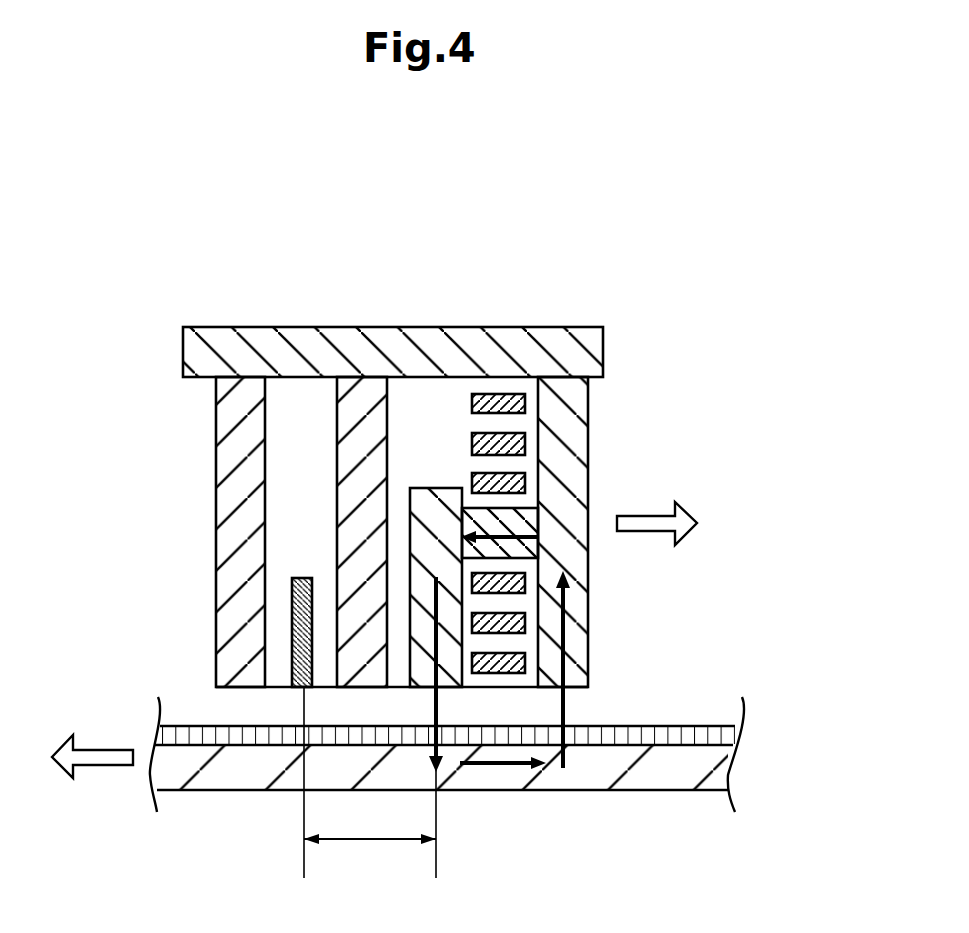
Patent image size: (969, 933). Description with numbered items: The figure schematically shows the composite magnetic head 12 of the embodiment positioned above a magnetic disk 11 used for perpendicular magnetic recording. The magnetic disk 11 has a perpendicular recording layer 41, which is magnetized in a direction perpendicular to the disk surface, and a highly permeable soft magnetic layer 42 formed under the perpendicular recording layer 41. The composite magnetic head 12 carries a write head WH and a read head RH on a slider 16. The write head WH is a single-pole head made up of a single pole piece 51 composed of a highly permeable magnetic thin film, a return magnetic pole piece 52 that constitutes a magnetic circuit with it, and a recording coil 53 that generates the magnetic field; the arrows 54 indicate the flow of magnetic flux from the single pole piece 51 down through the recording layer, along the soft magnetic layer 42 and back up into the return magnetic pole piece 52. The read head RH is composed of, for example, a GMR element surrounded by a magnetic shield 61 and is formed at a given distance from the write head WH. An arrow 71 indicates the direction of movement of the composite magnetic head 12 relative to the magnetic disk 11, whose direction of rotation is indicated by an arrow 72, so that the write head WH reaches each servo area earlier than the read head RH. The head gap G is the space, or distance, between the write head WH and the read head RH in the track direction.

The magnetic disk 11 is at (496, 759).
The composite magnetic head 12 is at (480, 466).
The slider 16 is at (442, 328).
The perpendicular recording layer 41 is at (703, 727).
The soft magnetic layer 42 is at (622, 792).
The single pole piece 51 is at (427, 488).
The return magnetic pole piece 52 is at (588, 466).
The recording coil 53 is at (525, 663).
The arrows 54 is at (505, 770).
The magnetic shield 61 is at (340, 437).
The arrow 71 is at (700, 523).
The arrow 72 is at (102, 758).
The read head RH is at (298, 602).
The write head WH is at (625, 458).
The head gap G is at (370, 782).